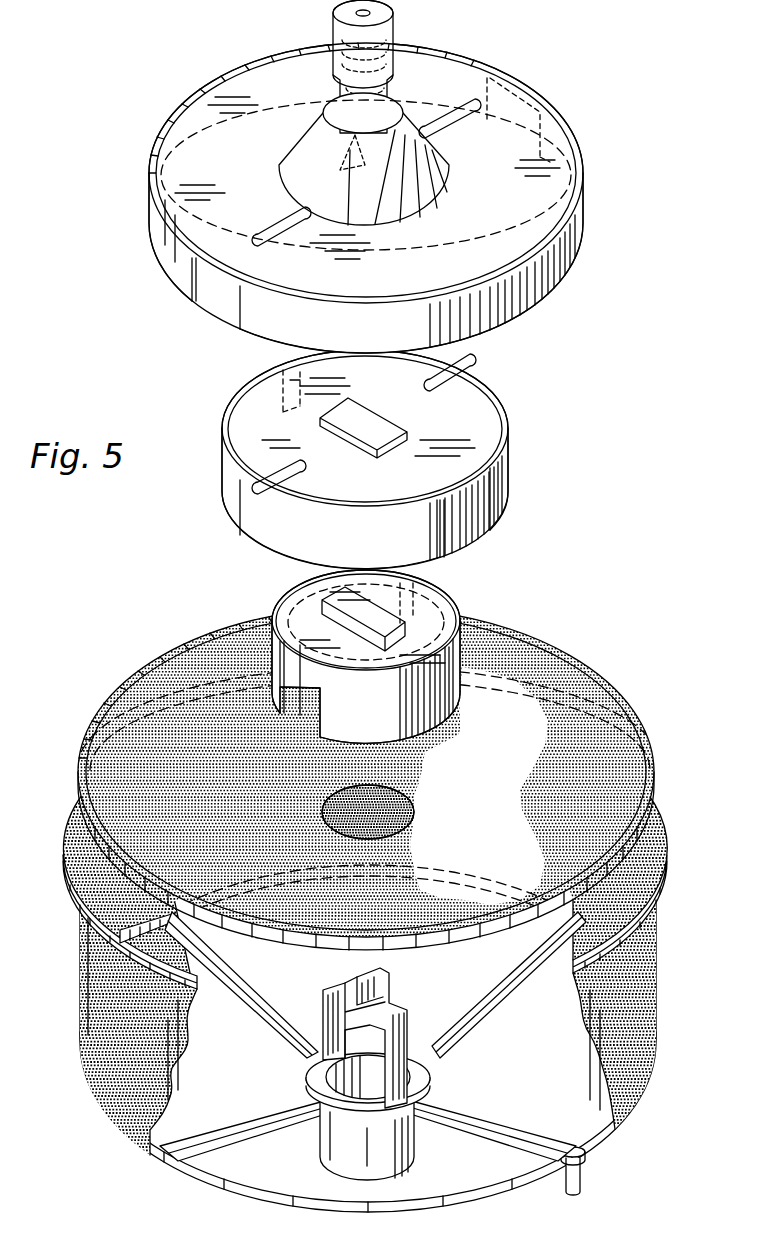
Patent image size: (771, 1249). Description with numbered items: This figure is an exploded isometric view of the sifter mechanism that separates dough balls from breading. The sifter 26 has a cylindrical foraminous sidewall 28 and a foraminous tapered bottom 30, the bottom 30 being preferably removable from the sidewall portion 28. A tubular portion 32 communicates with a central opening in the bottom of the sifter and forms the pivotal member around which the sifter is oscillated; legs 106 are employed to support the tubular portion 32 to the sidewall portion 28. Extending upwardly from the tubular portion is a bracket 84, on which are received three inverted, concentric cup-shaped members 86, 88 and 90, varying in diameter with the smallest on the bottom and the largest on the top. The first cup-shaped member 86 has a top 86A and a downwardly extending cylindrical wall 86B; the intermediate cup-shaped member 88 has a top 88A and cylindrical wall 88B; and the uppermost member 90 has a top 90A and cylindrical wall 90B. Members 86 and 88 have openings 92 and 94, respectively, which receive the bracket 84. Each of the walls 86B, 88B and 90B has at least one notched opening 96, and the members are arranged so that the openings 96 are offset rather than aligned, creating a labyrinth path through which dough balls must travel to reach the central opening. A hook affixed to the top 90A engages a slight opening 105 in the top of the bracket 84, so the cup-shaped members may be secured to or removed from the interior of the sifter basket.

The sifter 26 is at (670, 832).
The cylindrical foraminous sidewall 28 is at (640, 952).
The foraminous tapered bottom 30 is at (598, 695).
The tubular portion 32 is at (412, 1148).
The bracket 84 is at (404, 1016).
The first cup-shaped member 86 is at (470, 596).
The top 86A is at (298, 592).
The cylindrical wall 86B is at (440, 664).
The intermediate cup-shaped member 88 is at (510, 418).
The top 88A is at (470, 378).
The cylindrical wall 88B is at (262, 520).
The cup-shaped member 90 is at (585, 152).
The top 90A is at (458, 70).
The cylindrical wall 90B is at (165, 279).
The opening 92 is at (380, 607).
The opening 94 is at (392, 430).
The notched opening 96 is at (235, 315).
The slight opening 105 is at (380, 992).
The legs 106 is at (292, 1102).